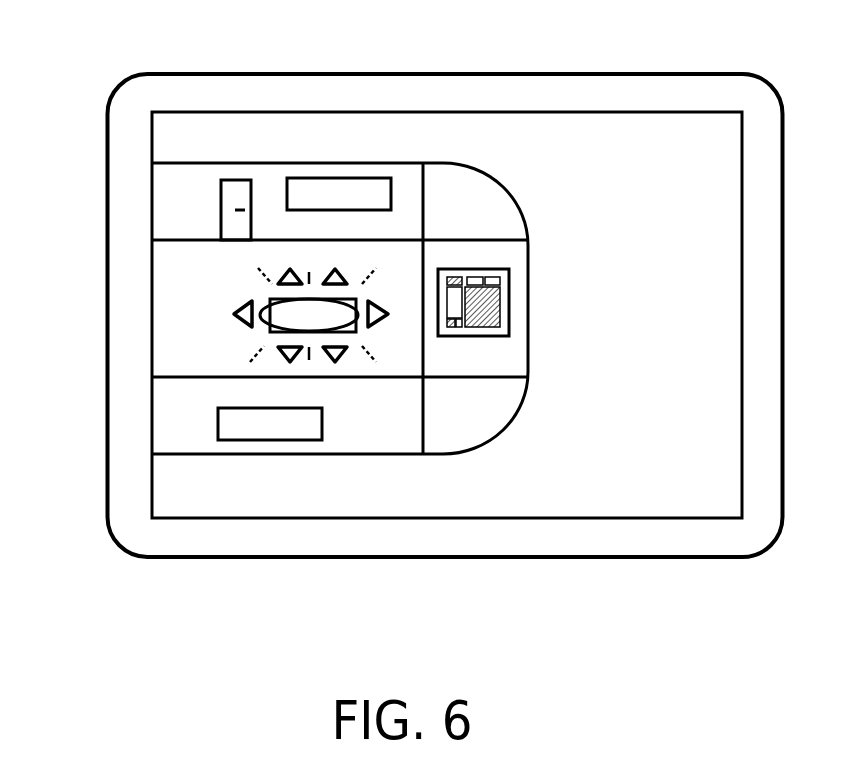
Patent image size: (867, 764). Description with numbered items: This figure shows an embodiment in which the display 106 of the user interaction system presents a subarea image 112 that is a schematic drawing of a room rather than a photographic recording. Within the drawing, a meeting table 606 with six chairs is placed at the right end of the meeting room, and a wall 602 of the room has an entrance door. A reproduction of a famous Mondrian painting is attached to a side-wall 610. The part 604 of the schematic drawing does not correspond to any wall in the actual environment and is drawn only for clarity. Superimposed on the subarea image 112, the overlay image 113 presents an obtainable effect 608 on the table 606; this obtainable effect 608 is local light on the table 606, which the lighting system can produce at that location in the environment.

The display 106 is at (121, 78).
The subarea image 112 is at (217, 487).
The overlay image 113 is at (282, 487).
The wall 602 is at (267, 180).
The part of the schematic drawing 604 is at (460, 182).
The meeting table 606 is at (282, 310).
The obtainable effect 608 is at (268, 320).
The side-wall 610 is at (465, 362).